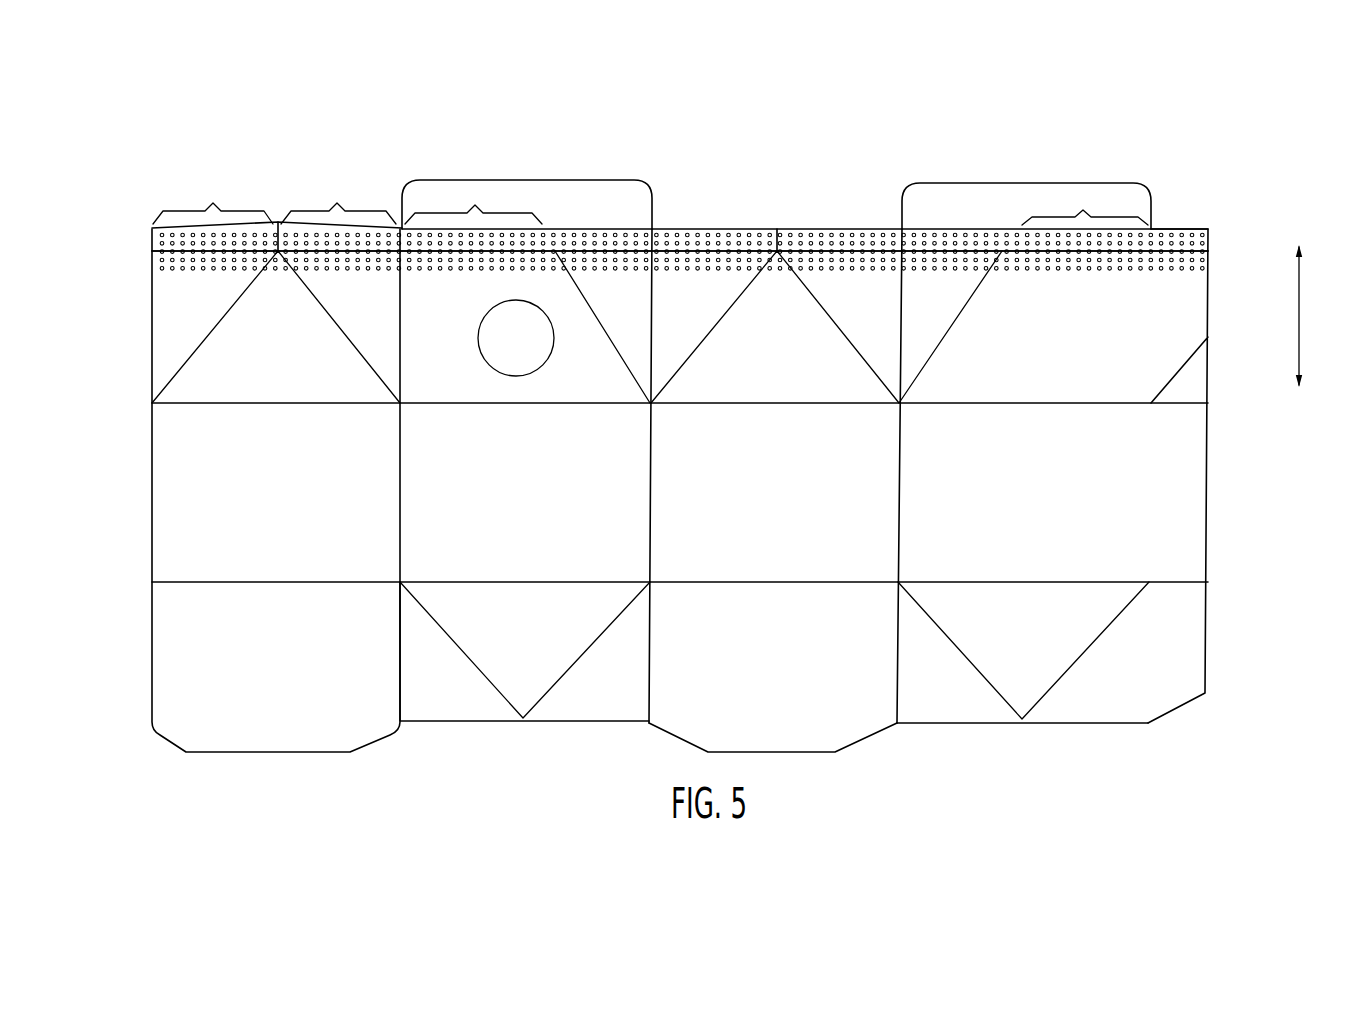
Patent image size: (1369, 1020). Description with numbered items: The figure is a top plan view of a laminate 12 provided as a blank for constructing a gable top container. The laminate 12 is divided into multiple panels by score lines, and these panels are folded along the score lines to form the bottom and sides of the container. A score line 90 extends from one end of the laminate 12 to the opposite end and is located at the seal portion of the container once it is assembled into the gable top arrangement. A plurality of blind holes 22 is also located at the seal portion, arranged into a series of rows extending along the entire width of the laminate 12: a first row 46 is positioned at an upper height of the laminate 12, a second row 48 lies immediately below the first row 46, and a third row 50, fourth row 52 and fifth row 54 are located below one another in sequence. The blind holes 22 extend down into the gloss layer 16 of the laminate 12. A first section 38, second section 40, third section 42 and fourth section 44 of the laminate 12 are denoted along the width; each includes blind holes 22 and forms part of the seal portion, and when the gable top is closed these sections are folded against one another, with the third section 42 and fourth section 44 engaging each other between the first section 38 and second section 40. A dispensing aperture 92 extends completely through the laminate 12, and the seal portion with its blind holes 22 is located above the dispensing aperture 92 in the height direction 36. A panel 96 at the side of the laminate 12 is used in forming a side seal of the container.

The laminate 12 is at (178, 138).
The gloss layer 16 is at (180, 440).
The blind holes 22 is at (198, 231).
The height direction 36 is at (1299, 322).
The first section 38 is at (527, 204).
The second section 40 is at (1026, 205).
The third section 42 is at (213, 197).
The fourth section 44 is at (338, 197).
The first row 46 is at (150, 235).
The second row 48 is at (150, 243).
The third row 50 is at (150, 251).
The fourth row 52 is at (150, 260).
The fifth row 54 is at (150, 269).
The score line 90 is at (732, 255).
The dispensing aperture 92 is at (527, 377).
The panel 96 is at (1196, 481).